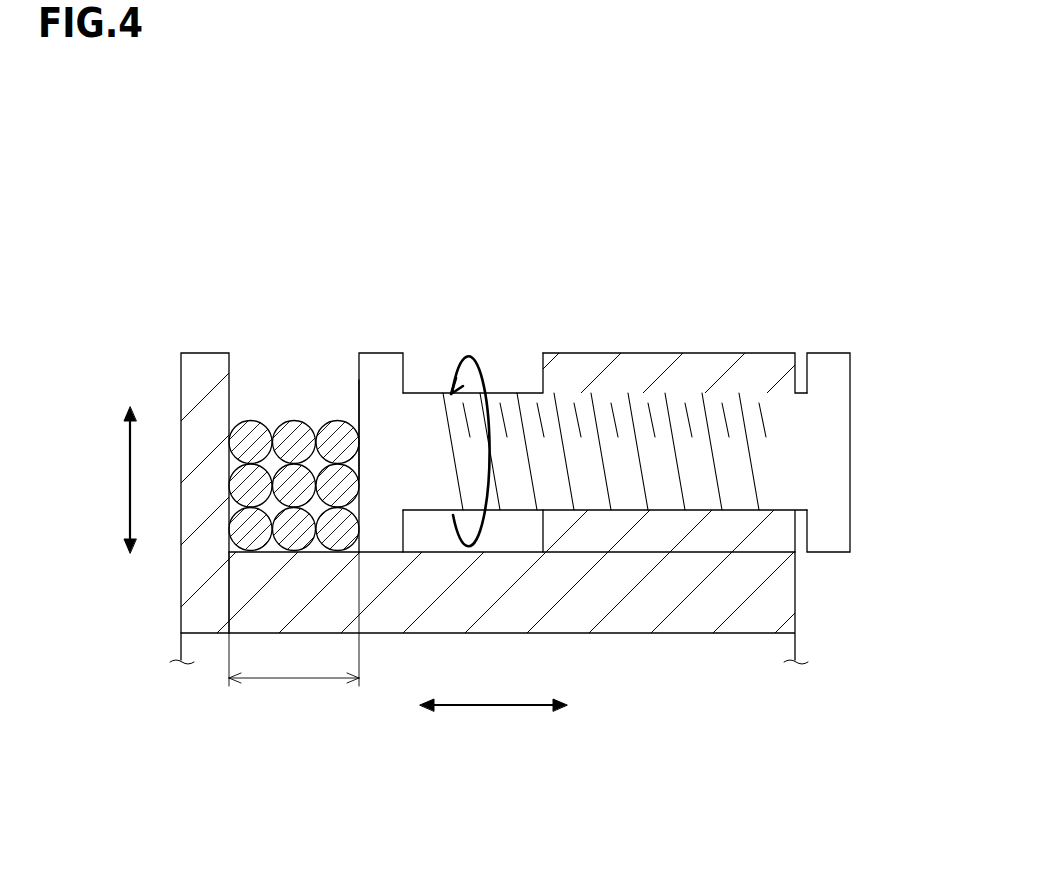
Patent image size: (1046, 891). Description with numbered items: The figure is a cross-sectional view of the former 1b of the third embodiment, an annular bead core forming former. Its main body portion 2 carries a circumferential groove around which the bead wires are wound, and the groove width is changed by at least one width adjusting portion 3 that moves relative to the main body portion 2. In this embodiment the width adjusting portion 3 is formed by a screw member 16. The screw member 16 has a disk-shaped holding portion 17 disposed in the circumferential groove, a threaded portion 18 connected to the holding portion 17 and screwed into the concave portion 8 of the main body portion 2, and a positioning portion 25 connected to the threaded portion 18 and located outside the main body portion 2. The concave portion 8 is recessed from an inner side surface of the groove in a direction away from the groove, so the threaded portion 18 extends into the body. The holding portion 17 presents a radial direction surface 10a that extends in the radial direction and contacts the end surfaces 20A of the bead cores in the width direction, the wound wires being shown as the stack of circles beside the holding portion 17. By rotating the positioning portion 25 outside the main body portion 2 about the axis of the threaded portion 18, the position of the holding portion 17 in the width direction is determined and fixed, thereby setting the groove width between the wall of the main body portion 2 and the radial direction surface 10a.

The former 1b is at (523, 459).
The main body portion 2 is at (757, 608).
The width adjusting portion 3 is at (523, 459).
The screw member 16 is at (523, 482).
The holding portion 17 is at (433, 387).
The threaded portion 18 is at (523, 482).
The positioning portion 25 is at (793, 387).
The concave portion 8 is at (697, 487).
The end surfaces of the bead cores 20A is at (359, 440).
The radial direction surface 10a is at (359, 380).